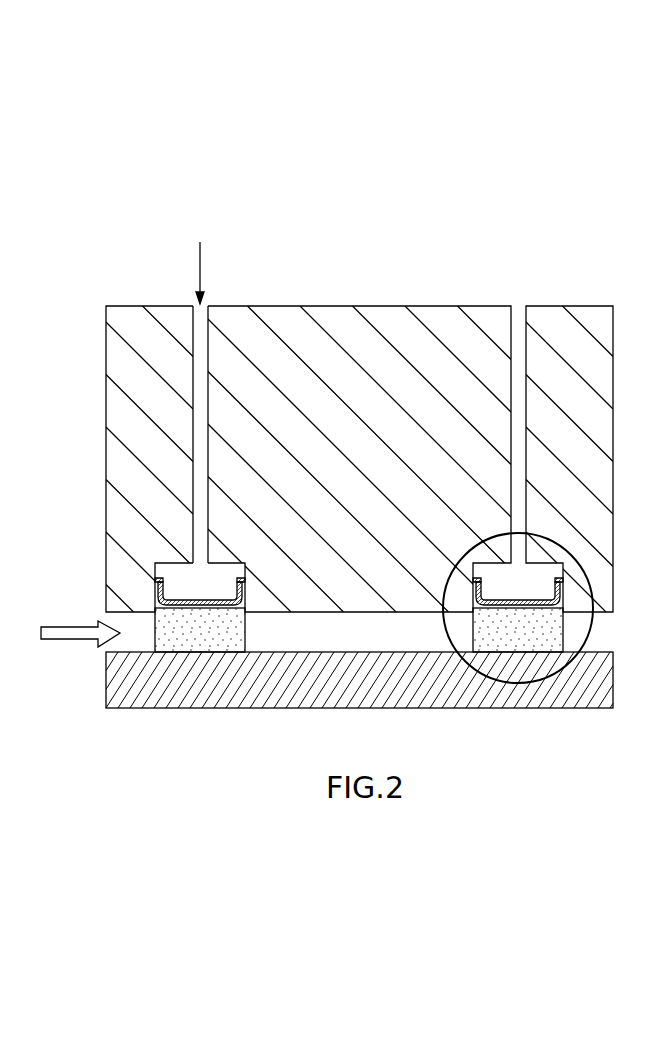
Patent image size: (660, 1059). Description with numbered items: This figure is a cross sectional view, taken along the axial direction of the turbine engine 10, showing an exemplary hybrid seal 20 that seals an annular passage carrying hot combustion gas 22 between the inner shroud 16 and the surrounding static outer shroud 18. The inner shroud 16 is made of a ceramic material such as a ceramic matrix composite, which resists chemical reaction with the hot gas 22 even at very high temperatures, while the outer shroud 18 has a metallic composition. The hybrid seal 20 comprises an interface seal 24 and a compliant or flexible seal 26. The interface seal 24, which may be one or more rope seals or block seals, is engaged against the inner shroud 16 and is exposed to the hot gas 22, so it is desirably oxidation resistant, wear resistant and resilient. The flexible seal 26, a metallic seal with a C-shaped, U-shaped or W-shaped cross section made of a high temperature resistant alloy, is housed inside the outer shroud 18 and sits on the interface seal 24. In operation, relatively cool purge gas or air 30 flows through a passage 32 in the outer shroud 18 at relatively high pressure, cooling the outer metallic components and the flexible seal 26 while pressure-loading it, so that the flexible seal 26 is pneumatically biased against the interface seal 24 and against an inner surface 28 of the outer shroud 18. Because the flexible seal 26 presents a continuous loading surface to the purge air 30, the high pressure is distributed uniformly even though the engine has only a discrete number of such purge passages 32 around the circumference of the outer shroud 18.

The turbine engine 10 is at (545, 108).
The inner shroud 16 is at (270, 708).
The outer shroud 18 is at (385, 318).
The hybrid seal 20 is at (590, 635).
The hot combustion gas 22 is at (68, 642).
The interface seal 24 is at (155, 630).
The flexible seal 26 is at (158, 595).
The inner surface of the outer shroud 28 is at (166, 576).
The purge gas or air 30 is at (204, 262).
The passage 32 is at (200, 489).